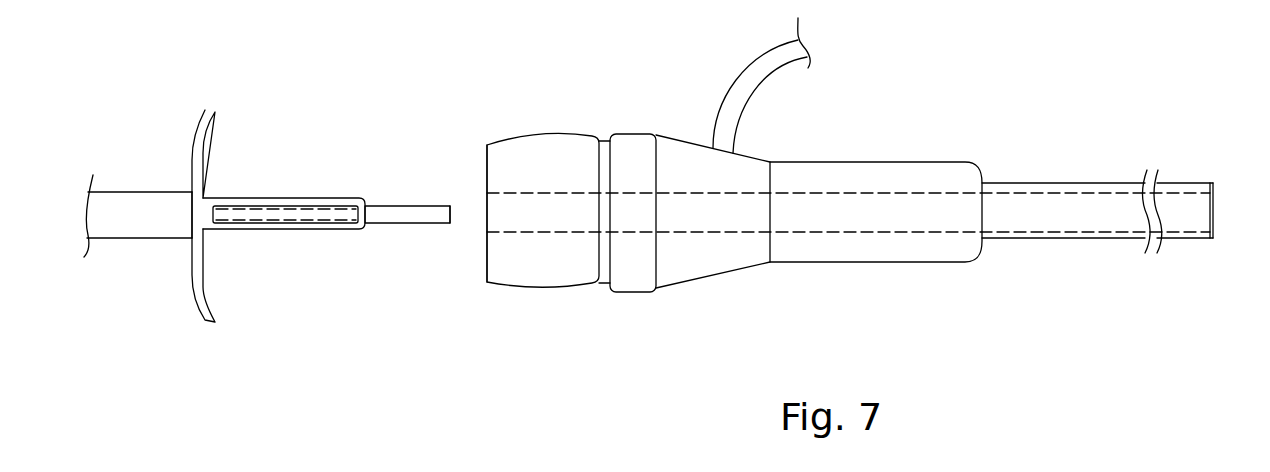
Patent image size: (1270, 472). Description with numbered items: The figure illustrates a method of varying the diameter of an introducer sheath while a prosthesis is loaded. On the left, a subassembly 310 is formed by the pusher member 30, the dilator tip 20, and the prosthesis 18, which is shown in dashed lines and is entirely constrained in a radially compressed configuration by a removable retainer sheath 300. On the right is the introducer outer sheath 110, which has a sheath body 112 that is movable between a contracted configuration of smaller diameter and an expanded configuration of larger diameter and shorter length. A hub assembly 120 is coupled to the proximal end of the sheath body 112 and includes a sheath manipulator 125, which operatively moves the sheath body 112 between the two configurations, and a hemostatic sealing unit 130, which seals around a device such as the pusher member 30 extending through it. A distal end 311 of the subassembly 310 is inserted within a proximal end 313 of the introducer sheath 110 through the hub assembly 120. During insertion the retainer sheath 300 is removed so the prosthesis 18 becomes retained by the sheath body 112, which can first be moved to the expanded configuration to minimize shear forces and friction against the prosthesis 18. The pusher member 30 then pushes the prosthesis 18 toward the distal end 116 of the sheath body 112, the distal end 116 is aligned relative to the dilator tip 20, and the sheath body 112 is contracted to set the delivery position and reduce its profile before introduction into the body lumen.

The pusher member 30 is at (130, 215).
The subassembly 310 is at (292, 318).
The retainer sheath 300 is at (250, 197).
The prosthesis 18 is at (292, 214).
The dilator tip 20 is at (399, 213).
The distal end of the subassembly 311 is at (437, 246).
The introducer outer sheath 110 is at (736, 310).
The hemostatic sealing unit 130 is at (573, 267).
The proximal end of the introducer sheath 313 is at (482, 252).
The hub assembly 120 is at (815, 130).
The sheath manipulator 125 is at (915, 248).
The sheath body 112 is at (1045, 240).
The distal end of the sheath body 116 is at (1215, 220).